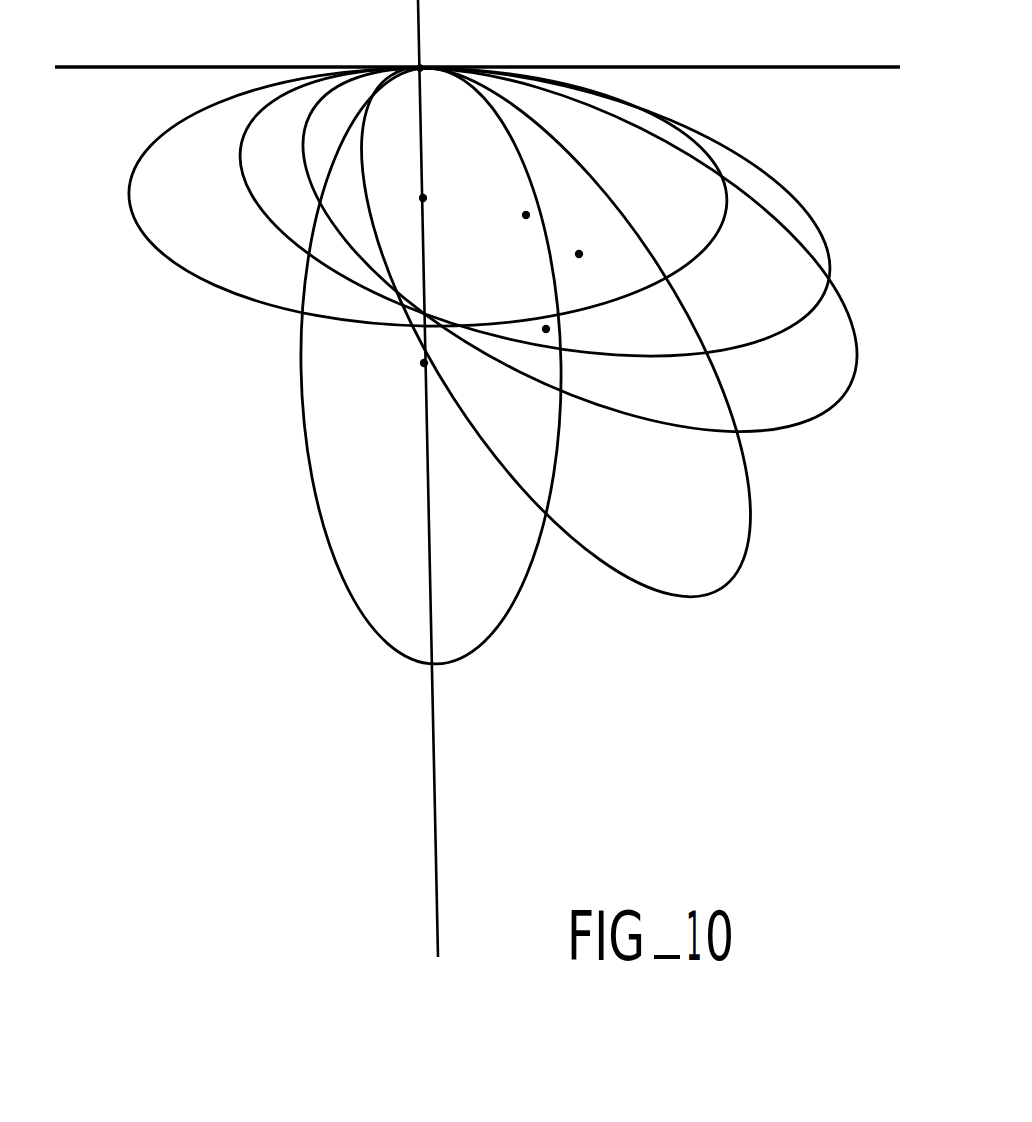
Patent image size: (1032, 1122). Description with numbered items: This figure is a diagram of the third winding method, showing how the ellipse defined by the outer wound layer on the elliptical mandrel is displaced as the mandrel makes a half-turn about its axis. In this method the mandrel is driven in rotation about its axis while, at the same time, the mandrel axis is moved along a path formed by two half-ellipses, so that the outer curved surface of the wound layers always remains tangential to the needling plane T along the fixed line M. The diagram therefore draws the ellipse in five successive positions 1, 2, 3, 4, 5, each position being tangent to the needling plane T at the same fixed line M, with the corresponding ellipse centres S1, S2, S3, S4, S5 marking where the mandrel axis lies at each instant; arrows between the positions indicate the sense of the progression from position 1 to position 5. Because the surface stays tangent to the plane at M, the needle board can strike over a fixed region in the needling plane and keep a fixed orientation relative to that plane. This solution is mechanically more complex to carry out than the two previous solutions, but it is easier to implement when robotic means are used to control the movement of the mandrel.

The ellipse in first position 1 is at (578, 667).
The ellipse in second position 2 is at (790, 557).
The ellipse in third position 3 is at (883, 313).
The ellipse in fourth position 4 is at (788, 133).
The ellipse in fifth position 5 is at (433, 197).
The center of ellipse in first position S1 is at (428, 362).
The center of ellipse in second position S2 is at (551, 329).
The center of ellipse in third position S3 is at (583, 256).
The center of ellipse in fourth position S4 is at (523, 214).
The center of ellipse in fifth position S5 is at (427, 197).
The fixed line M is at (422, 66).
The tangent line T is at (860, 66).